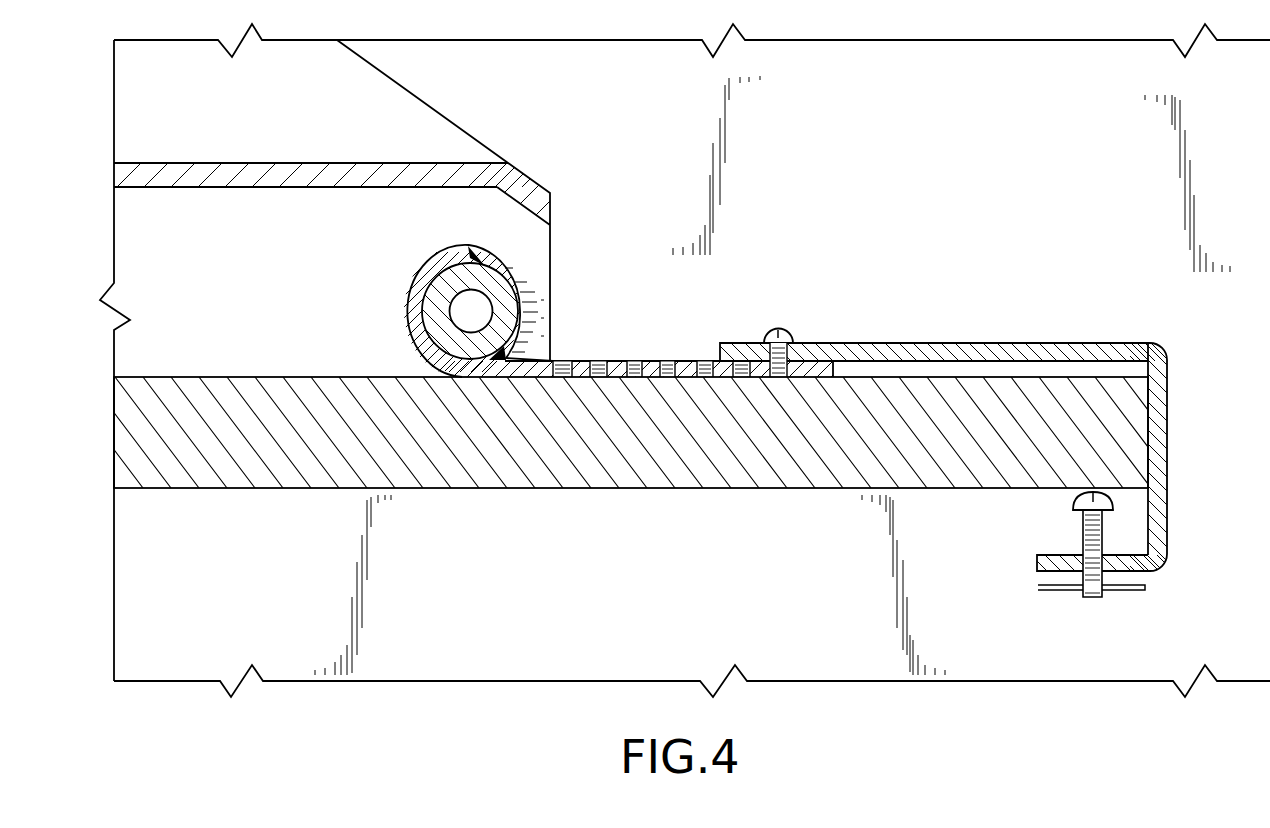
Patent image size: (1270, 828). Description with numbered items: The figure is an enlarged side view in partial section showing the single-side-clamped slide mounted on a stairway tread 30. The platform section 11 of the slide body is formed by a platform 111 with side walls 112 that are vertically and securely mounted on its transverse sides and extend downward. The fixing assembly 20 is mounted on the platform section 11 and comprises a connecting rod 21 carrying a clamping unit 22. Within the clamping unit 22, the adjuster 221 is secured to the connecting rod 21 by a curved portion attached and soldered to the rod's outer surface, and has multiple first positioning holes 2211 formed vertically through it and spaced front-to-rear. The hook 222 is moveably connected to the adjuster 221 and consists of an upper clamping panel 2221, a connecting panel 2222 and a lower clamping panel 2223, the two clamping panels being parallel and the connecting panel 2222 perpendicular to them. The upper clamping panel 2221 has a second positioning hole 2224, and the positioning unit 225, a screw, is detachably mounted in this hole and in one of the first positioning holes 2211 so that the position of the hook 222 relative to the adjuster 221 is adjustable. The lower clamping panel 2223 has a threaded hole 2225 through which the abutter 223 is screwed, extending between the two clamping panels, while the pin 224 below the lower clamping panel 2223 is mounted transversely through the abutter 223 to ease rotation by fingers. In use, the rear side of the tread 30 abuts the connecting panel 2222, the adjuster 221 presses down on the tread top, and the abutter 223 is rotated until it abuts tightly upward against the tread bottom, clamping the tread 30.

The platform section 11 is at (478, 116).
The platform 111 is at (276, 173).
The side wall 112 is at (535, 261).
The fixing assembly 20 is at (921, 234).
The connecting rod 21 is at (433, 308).
The clamping unit 22 is at (1064, 315).
The adjuster 221 is at (541, 368).
The first positioning holes 2211 is at (665, 368).
The upper clamping panel 2221 is at (918, 353).
The hook 222 is at (1175, 398).
The connecting panel 2222 is at (1158, 470).
The lower clamping panel 2223 is at (1037, 566).
The second positioning hole 2224 is at (770, 346).
The threaded hole 2225 is at (1090, 556).
The abutter 223 is at (1086, 598).
The pin 224 is at (1124, 596).
The positioning unit 225 is at (790, 338).
The tread 30 is at (849, 473).